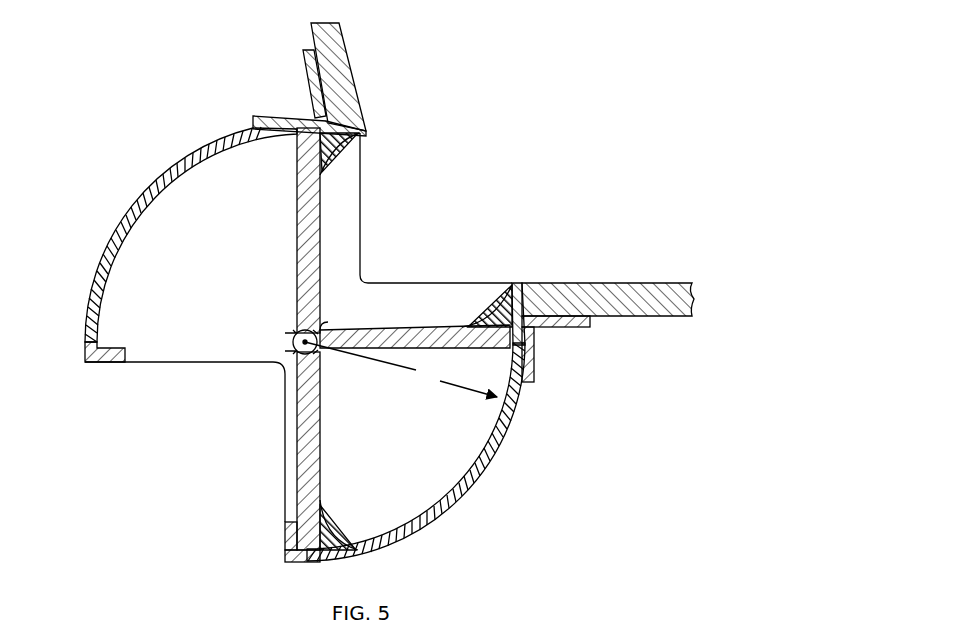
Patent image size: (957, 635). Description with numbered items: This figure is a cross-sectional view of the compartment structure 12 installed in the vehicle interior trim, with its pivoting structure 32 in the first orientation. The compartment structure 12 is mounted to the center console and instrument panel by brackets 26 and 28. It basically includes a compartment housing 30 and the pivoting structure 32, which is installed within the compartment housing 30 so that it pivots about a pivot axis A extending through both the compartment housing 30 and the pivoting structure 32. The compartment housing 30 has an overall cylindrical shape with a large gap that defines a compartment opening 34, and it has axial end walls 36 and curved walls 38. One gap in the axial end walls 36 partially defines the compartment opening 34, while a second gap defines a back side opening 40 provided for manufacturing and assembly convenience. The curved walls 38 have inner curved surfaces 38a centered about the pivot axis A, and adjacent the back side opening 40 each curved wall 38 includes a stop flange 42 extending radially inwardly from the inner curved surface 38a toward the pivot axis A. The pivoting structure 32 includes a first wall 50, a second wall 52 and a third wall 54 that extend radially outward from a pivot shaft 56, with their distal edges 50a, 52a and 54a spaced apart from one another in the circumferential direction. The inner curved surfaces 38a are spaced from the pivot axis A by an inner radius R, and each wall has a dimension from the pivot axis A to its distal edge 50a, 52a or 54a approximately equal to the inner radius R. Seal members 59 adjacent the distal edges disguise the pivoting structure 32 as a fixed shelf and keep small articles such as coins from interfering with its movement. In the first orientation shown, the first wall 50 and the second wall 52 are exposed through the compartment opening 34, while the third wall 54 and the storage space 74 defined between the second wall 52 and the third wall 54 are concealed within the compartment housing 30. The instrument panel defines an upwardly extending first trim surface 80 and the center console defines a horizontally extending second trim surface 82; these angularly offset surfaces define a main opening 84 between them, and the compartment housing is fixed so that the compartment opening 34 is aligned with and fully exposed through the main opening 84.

The compartment structure 12 is at (155, 105).
The bracket 26 is at (304, 62).
The bracket 28 is at (572, 328).
The compartment housing 30 is at (100, 257).
The pivoting structure 32 is at (296, 212).
The compartment opening 34 is at (367, 134).
The axial end wall 36 is at (208, 322).
The curved wall 38 is at (124, 212).
The inner curved surface 38a is at (153, 195).
The back side opening 40 is at (106, 363).
The stop flange 42 is at (118, 350).
The first wall 50 is at (321, 237).
The distal edge 50a is at (290, 116).
The second wall 52 is at (430, 325).
The distal edge 52a is at (532, 350).
The third wall 54 is at (321, 432).
The distal edge 54a is at (298, 562).
The pivot shaft 56 is at (286, 382).
The seal member 59 is at (346, 150).
The storage space 74 is at (492, 440).
The first trim surface 80 is at (347, 50).
The second trim surface 82 is at (628, 283).
The main opening 84 is at (516, 290).
The pivot axis A is at (297, 340).
The inner radius R is at (401, 369).